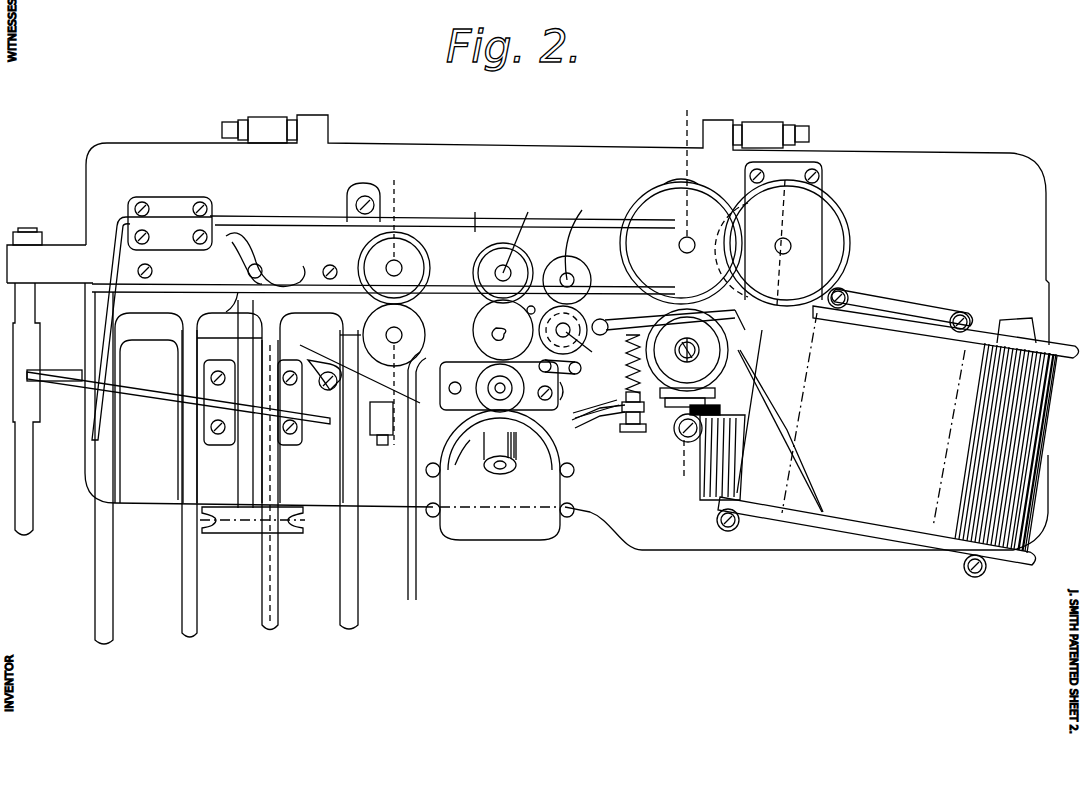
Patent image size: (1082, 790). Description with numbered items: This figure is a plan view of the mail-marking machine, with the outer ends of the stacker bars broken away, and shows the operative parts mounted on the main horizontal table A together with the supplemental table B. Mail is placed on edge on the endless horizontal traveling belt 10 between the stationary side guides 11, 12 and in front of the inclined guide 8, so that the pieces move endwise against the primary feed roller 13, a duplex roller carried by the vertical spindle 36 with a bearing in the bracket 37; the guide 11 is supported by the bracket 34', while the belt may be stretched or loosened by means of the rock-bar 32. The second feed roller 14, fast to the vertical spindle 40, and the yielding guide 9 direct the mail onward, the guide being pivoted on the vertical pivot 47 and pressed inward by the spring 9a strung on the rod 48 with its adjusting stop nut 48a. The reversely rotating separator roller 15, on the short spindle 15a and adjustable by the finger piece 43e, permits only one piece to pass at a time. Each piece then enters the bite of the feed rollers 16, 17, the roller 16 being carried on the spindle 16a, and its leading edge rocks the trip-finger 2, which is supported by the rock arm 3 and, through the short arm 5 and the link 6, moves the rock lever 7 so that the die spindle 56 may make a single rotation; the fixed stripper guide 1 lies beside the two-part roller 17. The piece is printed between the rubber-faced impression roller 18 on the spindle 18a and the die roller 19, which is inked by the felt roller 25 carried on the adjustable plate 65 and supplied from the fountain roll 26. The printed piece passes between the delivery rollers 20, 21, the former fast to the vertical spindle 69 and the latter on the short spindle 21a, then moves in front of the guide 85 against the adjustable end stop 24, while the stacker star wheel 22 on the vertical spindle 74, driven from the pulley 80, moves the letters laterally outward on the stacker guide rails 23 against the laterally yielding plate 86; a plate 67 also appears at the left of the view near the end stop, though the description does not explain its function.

The main horizontal table A is at (567, 332).
The short arm 5 is at (785, 118).
The link 6 is at (679, 298).
The rock lever 7 is at (598, 428).
The inclined guide 8 is at (772, 434).
The yielding guide 9 is at (742, 324).
The spring 9a is at (596, 398).
The endless horizontal traveling belt 10 is at (919, 433).
The stationary side guide 11 is at (942, 338).
The stationary side guide 12 is at (884, 528).
The primary feed roller 13 is at (256, 300).
The second feed roller 14 is at (630, 270).
The reversely rotating separator roller 15 is at (762, 349).
The short spindle 15a is at (687, 342).
The trip pressure-roller 16 is at (567, 180).
The spindle 16a is at (593, 233).
The trip feed-roller 17 is at (575, 373).
The impression roller 18 is at (503, 185).
The spindle 18a is at (529, 229).
The die or marking roller 19 is at (503, 330).
The delivery roller 20 is at (416, 252).
The delivery roller 21 is at (405, 338).
The short spindle 21a is at (363, 336).
The stacker star wheel 22 is at (270, 245).
The stacker guide rails 23 is at (57, 453).
The adjustable end stop 24 is at (105, 300).
The inking felt roller 25 is at (462, 457).
The fountain roll 26 is at (500, 568).
The rock-bar 32 is at (1011, 320).
The bracket 34' is at (900, 304).
The vertical spindle 36 is at (790, 248).
The bracket 37 is at (824, 183).
The vertical spindle 40 is at (680, 247).
The rotatable finger piece 43e is at (720, 422).
The vertical pivot 47 is at (593, 348).
The rod 48 is at (628, 425).
The adjusting stop nut 48a is at (638, 432).
The die spindle 56 is at (502, 342).
The adjustable plate 65 is at (499, 387).
The plate 67 is at (172, 210).
The vertical spindle 69 is at (402, 268).
The vertical spindle 74 is at (262, 283).
The pulley 80 is at (222, 540).
The guide 85 is at (245, 292).
The laterally yielding plate 86 is at (160, 396).
The supplemental table B is at (466, 210).
The fixed stripper guide 1 is at (557, 321).
The trip-finger 2 is at (663, 317).
The rock arm 3 is at (572, 397).